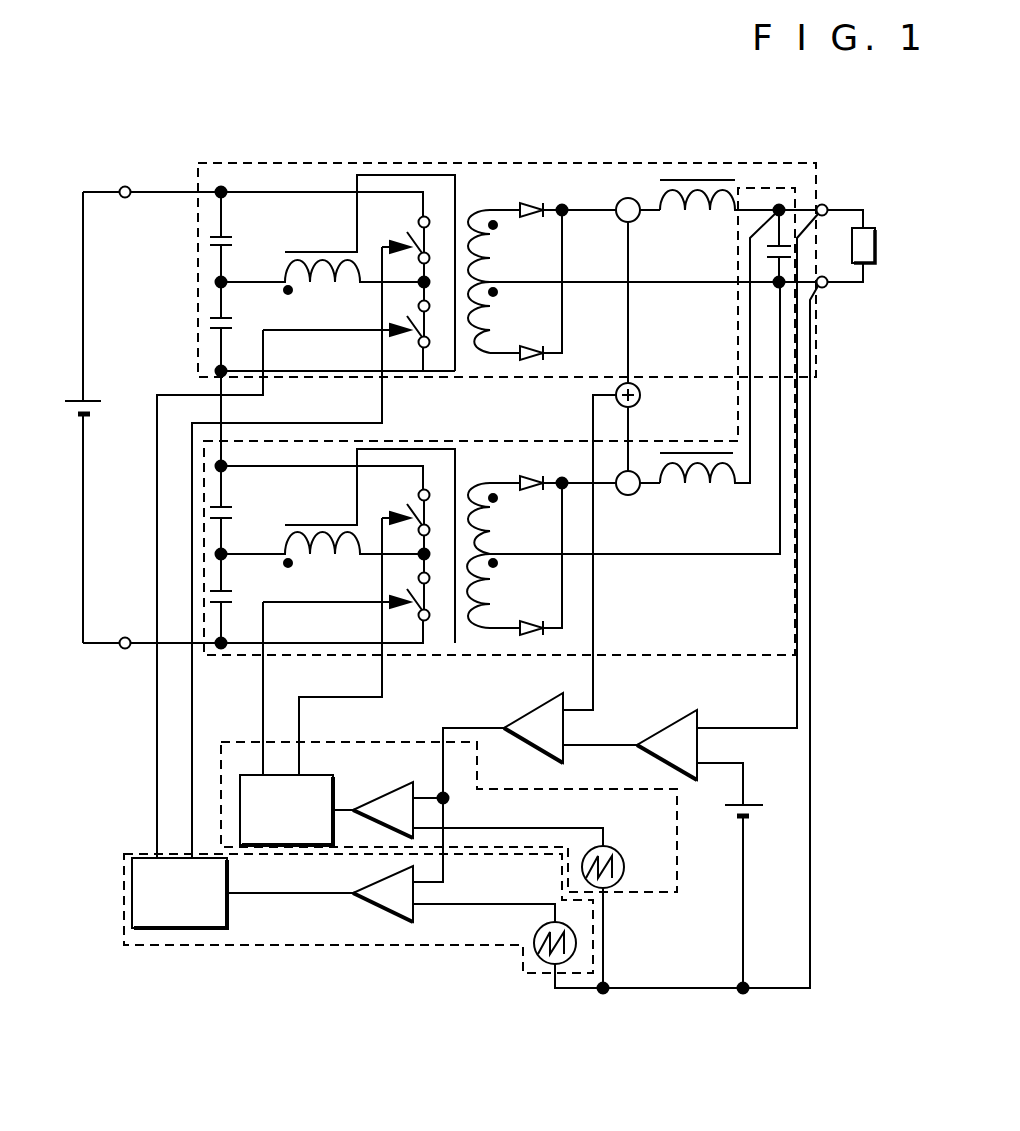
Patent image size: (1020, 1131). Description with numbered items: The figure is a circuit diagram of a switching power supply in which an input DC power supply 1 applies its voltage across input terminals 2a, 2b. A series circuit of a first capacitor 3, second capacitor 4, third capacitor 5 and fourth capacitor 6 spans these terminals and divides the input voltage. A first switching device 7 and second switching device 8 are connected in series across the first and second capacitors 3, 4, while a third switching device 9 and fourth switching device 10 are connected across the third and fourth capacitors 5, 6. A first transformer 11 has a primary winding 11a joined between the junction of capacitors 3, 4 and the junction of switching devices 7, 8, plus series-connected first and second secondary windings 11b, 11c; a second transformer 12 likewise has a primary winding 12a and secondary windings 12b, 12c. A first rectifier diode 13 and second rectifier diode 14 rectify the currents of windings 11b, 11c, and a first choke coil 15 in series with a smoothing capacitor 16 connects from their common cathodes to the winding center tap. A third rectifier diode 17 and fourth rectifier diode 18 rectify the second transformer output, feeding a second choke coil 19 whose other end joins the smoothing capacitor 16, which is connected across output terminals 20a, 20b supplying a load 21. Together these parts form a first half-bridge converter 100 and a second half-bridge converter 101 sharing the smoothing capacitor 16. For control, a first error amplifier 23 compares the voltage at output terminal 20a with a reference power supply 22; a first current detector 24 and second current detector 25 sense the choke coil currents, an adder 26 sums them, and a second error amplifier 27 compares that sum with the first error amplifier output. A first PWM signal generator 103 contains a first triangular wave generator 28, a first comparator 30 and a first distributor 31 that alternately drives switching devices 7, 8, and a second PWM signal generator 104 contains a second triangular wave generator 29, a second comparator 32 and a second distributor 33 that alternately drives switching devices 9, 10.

The input DC power supply 1 is at (78, 400).
The input terminal 2a is at (120, 190).
The input terminal 2b is at (120, 647).
The first capacitor 3 is at (218, 237).
The second capacitor 4 is at (218, 318).
The third capacitor 5 is at (216, 507).
The fourth capacitor 6 is at (216, 591).
The first switching device 7 is at (410, 240).
The second switching device 8 is at (410, 325).
The third switching device 9 is at (410, 512).
The fourth switching device 10 is at (410, 600).
The first transformer 11 is at (320, 252).
The primary winding 11a is at (288, 293).
The first secondary winding 11b is at (492, 258).
The second secondary winding 11c is at (492, 328).
The second transformer 12 is at (320, 525).
The primary winding 12a is at (288, 566).
The first secondary winding 12b is at (492, 534).
The second secondary winding 12c is at (495, 600).
The first rectifier diode 13 is at (530, 205).
The second rectifier diode 14 is at (545, 350).
The first choke coil 15 is at (700, 180).
The smoothing capacitor 16 is at (775, 255).
The third rectifier diode 17 is at (530, 480).
The fourth rectifier diode 18 is at (528, 625).
The second choke coil 19 is at (695, 453).
The output terminal 20a is at (826, 206).
The output terminal 20b is at (826, 287).
The load 21 is at (870, 265).
The reference power supply 22 is at (750, 805).
The first error amplifier 23 is at (705, 712).
The first current detector 24 is at (630, 198).
The second current detector 25 is at (635, 475).
The adder 26 is at (640, 385).
The second error amplifier 27 is at (530, 700).
The first triangular wave generator 28 is at (535, 940).
The second triangular wave generator 29 is at (620, 850).
The first comparator 30 is at (385, 882).
The first distributor 31 is at (230, 905).
The second comparator 32 is at (385, 790).
The second distributor 33 is at (250, 775).
The first half-bridge converter 100 is at (245, 163).
The second half-bridge converter 101 is at (245, 656).
The first PWM signal generator 103 is at (125, 855).
The second PWM signal generator 104 is at (220, 790).